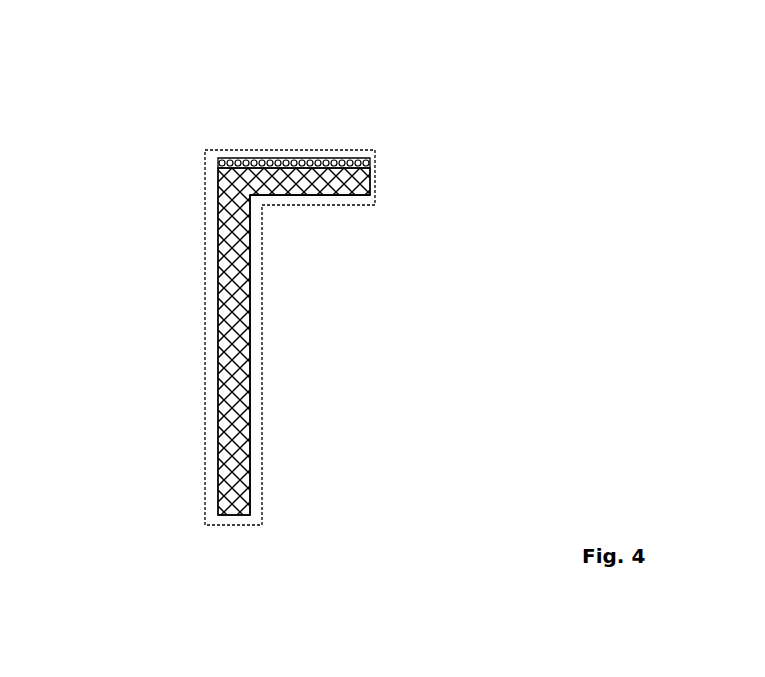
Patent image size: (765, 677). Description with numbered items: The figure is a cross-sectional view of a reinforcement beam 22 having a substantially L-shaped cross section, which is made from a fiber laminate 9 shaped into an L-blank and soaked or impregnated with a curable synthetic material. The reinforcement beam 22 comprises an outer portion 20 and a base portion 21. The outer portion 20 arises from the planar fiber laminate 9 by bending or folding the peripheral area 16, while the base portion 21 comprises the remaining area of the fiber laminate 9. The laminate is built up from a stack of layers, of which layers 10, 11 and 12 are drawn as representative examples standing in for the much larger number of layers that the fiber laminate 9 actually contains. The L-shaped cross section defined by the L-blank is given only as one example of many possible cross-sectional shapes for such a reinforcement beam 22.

The fiber laminate 9 is at (351, 336).
The layer 10 is at (295, 341).
The layer 11 is at (251, 455).
The layer 12 is at (384, 162).
The peripheral area 16 is at (326, 214).
The outer portion 20 is at (303, 224).
The base portion 21 is at (193, 322).
The reinforcement beam 22 is at (320, 65).